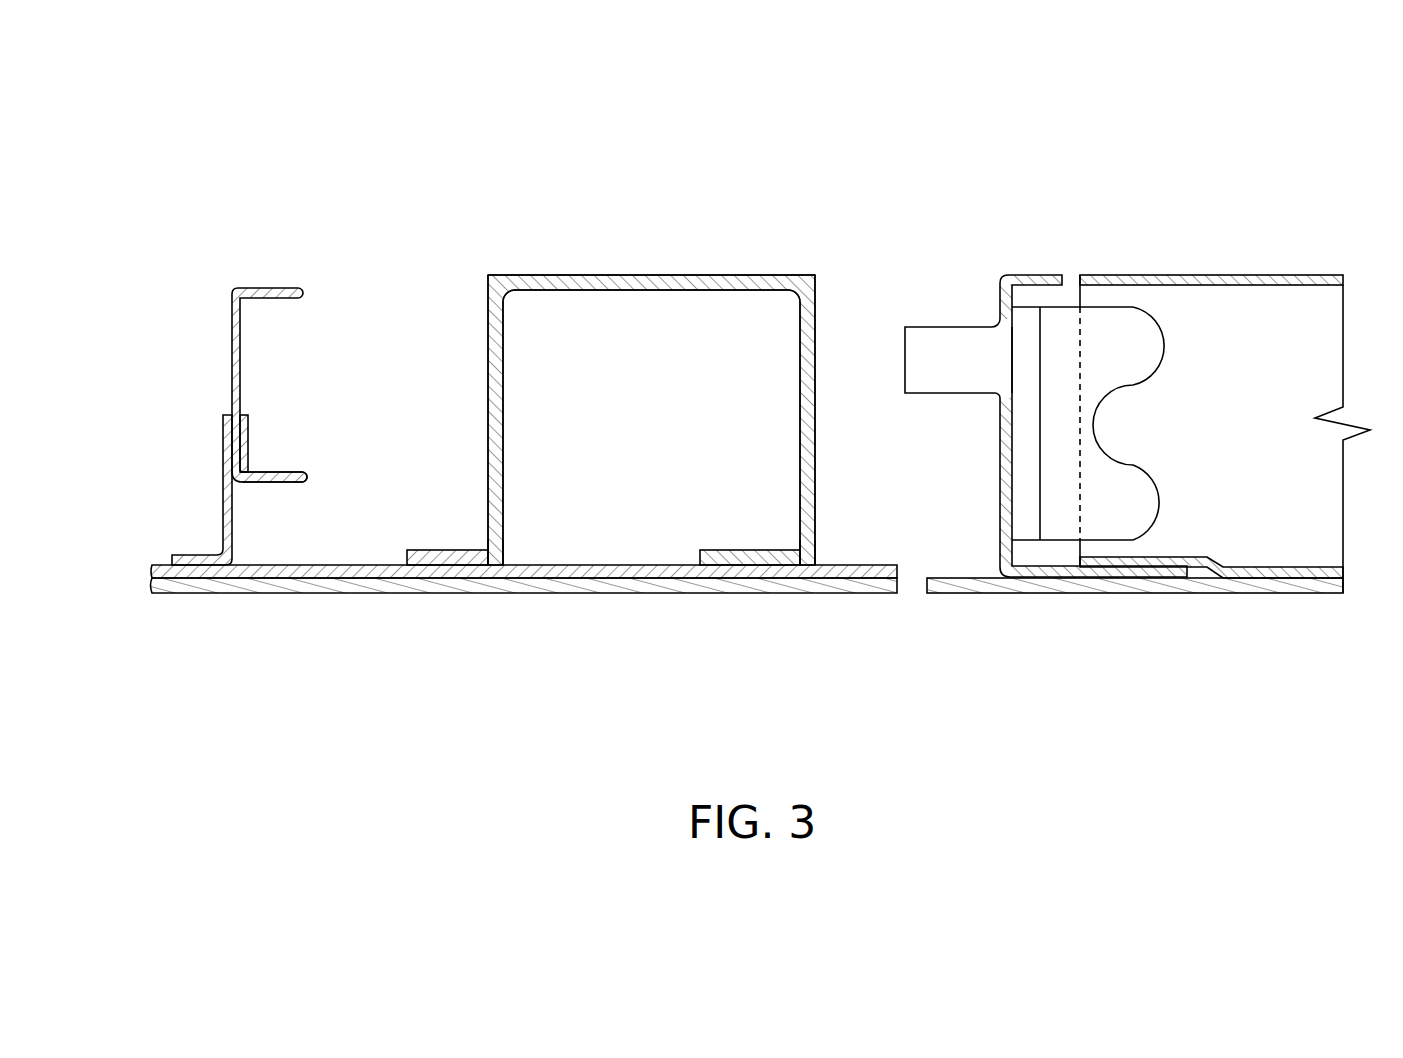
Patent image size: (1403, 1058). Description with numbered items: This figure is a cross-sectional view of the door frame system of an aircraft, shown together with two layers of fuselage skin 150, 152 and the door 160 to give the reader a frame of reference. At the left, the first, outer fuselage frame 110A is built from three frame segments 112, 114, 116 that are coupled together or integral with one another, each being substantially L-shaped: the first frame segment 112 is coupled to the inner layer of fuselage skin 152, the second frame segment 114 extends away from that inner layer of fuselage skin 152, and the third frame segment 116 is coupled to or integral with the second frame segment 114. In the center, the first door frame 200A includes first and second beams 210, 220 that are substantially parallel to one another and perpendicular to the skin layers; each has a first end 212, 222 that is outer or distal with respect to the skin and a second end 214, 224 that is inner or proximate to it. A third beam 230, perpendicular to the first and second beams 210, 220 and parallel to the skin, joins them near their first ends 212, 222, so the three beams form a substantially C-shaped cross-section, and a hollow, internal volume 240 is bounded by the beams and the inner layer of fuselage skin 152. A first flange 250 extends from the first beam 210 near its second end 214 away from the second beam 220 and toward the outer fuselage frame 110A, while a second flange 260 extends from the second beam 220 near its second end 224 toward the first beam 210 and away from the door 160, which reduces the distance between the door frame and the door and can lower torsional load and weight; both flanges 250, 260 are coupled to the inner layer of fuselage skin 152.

The first, outer fuselage frame 110A is at (265, 363).
The first frame segment 112 is at (222, 513).
The second frame segment 114 is at (240, 355).
The third frame segment 116 is at (277, 470).
The outer layer of fuselage skin 150 is at (333, 585).
The inner layer of fuselage skin 152 is at (377, 572).
The door 160 is at (1010, 360).
The first door frame 200A is at (676, 330).
The first beam 210 is at (505, 458).
The first end of first beam 212 is at (515, 320).
The second end of first beam 214 is at (510, 555).
The second beam 220 is at (800, 427).
The first end of second beam 222 is at (777, 307).
The second end of second beam 224 is at (818, 542).
The third beam 230 is at (655, 292).
The hollow, internal volume 240 is at (682, 471).
The first flange 250 is at (427, 553).
The second flange 260 is at (715, 550).